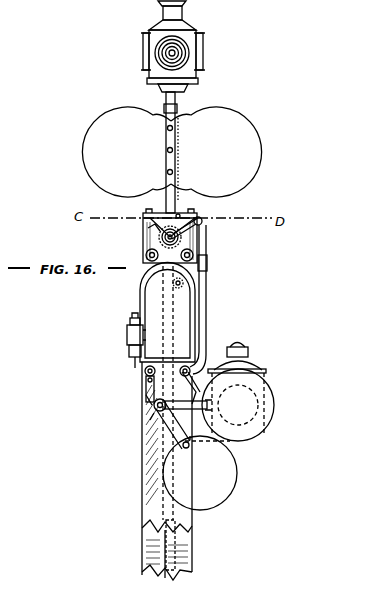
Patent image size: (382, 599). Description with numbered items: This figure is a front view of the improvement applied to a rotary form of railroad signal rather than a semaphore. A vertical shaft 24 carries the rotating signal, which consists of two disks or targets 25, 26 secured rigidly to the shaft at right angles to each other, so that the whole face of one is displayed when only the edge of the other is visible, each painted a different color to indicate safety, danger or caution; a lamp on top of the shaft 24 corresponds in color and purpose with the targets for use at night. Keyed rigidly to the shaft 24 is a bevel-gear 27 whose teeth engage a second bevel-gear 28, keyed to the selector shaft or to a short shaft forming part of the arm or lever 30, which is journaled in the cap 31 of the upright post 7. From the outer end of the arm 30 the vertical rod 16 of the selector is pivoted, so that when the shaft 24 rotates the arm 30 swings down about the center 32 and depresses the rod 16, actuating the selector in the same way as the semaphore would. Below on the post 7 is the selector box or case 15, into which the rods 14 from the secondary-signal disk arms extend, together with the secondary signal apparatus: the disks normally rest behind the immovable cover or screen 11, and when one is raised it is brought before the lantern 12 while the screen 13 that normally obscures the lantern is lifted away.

The upright post 7 is at (167, 471).
The cover or screen 11 is at (200, 473).
The lantern 12 is at (238, 357).
The screen 13 is at (238, 405).
The rod 14 is at (146, 382).
The selector box or case 15 is at (167, 392).
The vertical rod 16 is at (207, 249).
The vertical shaft 24 is at (176, 97).
The disk or target 25 is at (171, 152).
The disk or target 26 is at (177, 108).
The bevel-gear 27 is at (153, 226).
The bevel-gear 28 is at (162, 237).
The arm or lever 30 is at (203, 222).
The cap of the post 31 is at (181, 215).
The center 32 is at (166, 240).